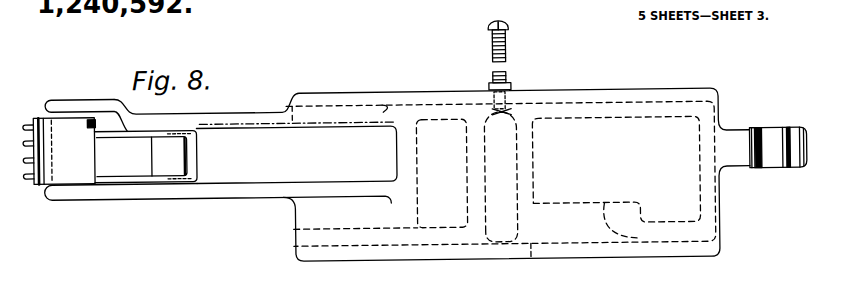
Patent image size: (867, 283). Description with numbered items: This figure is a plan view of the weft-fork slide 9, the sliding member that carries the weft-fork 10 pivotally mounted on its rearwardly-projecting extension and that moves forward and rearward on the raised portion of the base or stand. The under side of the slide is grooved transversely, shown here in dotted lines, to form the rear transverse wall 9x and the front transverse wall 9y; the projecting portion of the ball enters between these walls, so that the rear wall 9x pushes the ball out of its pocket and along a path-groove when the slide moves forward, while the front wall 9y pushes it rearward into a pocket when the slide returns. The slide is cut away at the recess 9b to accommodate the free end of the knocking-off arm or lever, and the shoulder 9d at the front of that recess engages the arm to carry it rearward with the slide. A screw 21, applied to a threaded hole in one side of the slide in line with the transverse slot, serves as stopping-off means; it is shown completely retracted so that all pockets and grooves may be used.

The weft-fork slide 9 is at (607, 92).
The recess 9b is at (618, 246).
The shoulder 9d is at (623, 244).
The rear transverse wall 9x is at (493, 156).
The front transverse wall 9y is at (512, 165).
The weft-fork 10 is at (38, 181).
The screw 21 is at (493, 59).